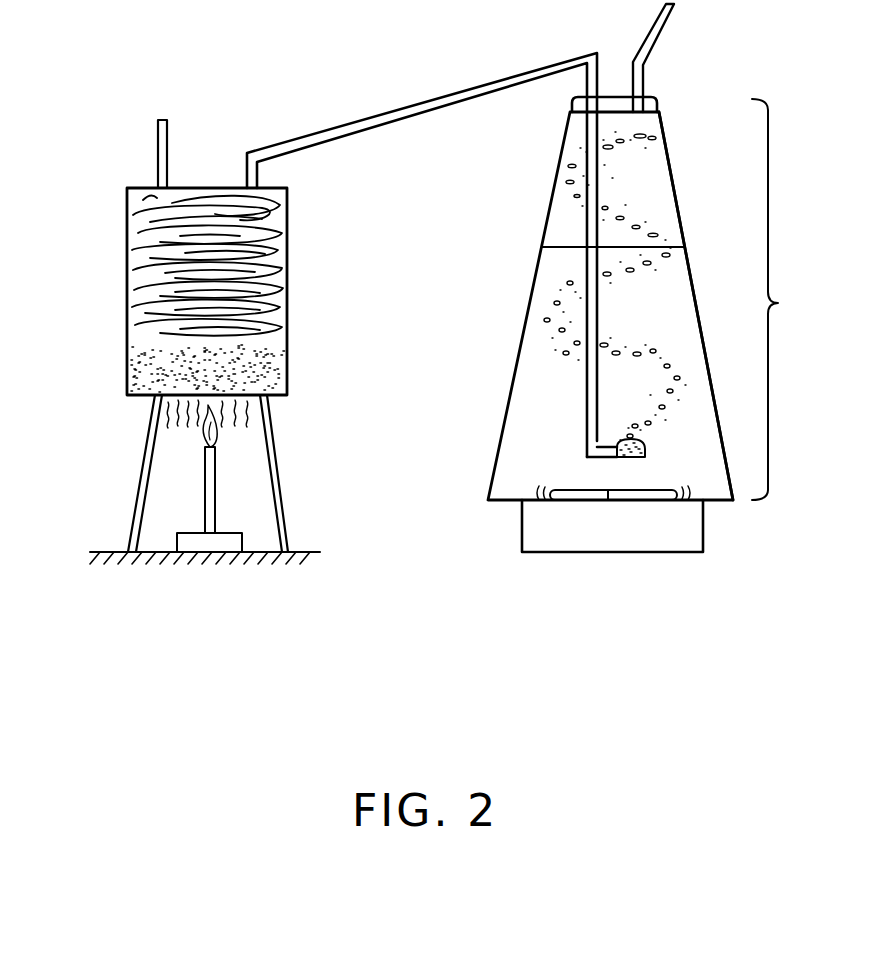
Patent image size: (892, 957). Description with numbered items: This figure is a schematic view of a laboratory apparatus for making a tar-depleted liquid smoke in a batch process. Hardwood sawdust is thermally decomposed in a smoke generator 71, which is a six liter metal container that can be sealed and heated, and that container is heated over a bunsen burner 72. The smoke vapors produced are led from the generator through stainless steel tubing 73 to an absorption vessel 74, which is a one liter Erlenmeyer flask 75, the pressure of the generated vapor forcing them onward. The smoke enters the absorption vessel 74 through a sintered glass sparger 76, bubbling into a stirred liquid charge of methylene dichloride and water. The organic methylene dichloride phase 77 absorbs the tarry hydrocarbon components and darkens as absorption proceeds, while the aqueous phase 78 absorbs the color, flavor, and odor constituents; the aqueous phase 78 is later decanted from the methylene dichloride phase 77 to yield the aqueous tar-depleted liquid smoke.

The smoke generator 71 is at (263, 232).
The bunsen burner 72 is at (209, 498).
The stainless steel tubing 73 is at (404, 112).
The absorption vessel 74 is at (648, 299).
The Erlenmeyer flask 75 is at (495, 468).
The sintered glass sparger 76 is at (626, 459).
The methylene dichloride phase 77 is at (708, 465).
The aqueous phase 78 is at (572, 200).